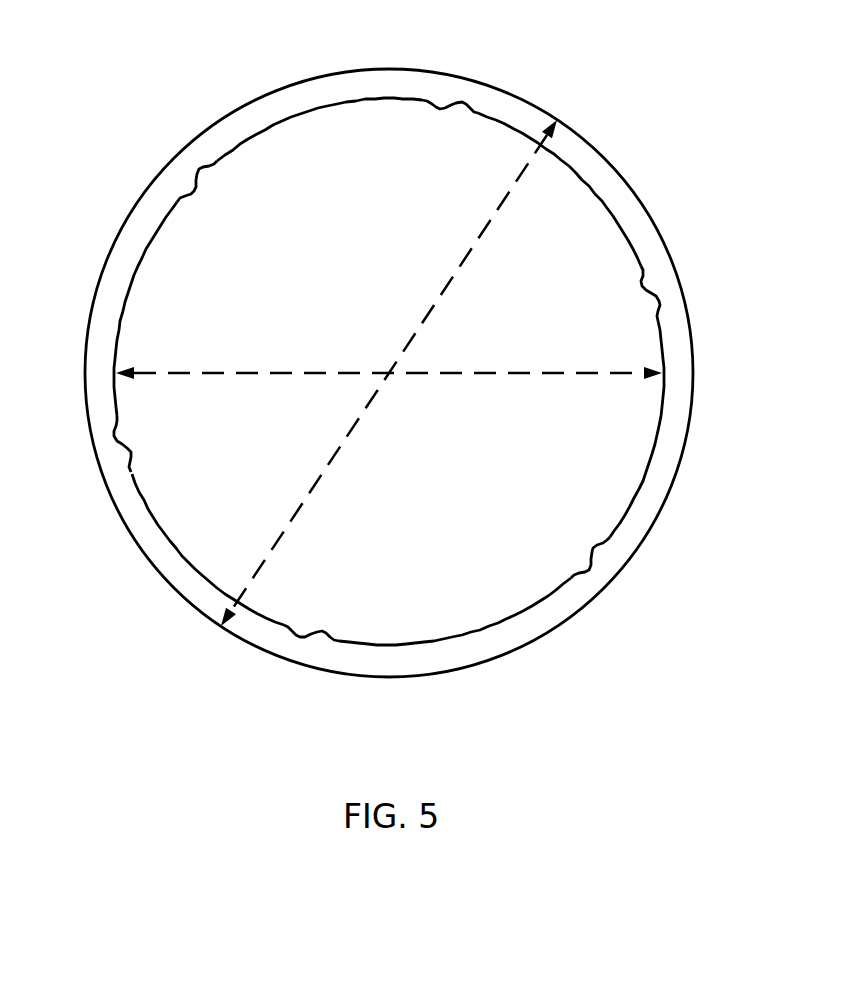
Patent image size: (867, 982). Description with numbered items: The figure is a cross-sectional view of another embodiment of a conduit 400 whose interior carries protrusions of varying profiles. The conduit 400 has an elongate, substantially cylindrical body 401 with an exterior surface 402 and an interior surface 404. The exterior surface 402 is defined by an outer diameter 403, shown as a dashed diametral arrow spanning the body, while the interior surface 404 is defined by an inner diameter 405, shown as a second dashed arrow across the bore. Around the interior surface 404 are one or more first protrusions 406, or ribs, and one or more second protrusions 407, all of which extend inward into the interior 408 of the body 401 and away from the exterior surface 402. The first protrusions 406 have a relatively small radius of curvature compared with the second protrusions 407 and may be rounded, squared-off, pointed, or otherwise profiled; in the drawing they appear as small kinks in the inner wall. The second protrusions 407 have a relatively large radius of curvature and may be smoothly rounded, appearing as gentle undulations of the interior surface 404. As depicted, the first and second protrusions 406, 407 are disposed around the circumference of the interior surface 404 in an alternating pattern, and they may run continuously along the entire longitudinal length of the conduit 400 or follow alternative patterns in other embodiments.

The conduit 400 is at (180, 72).
The body 401 is at (592, 162).
The exterior surface 402 is at (519, 90).
The outer diameter 403 is at (342, 433).
The interior surface 404 is at (626, 240).
The inner diameter 405 is at (205, 372).
The first protrusions 406 is at (583, 552).
The second protrusions 407 is at (143, 287).
The interior 408 is at (588, 464).